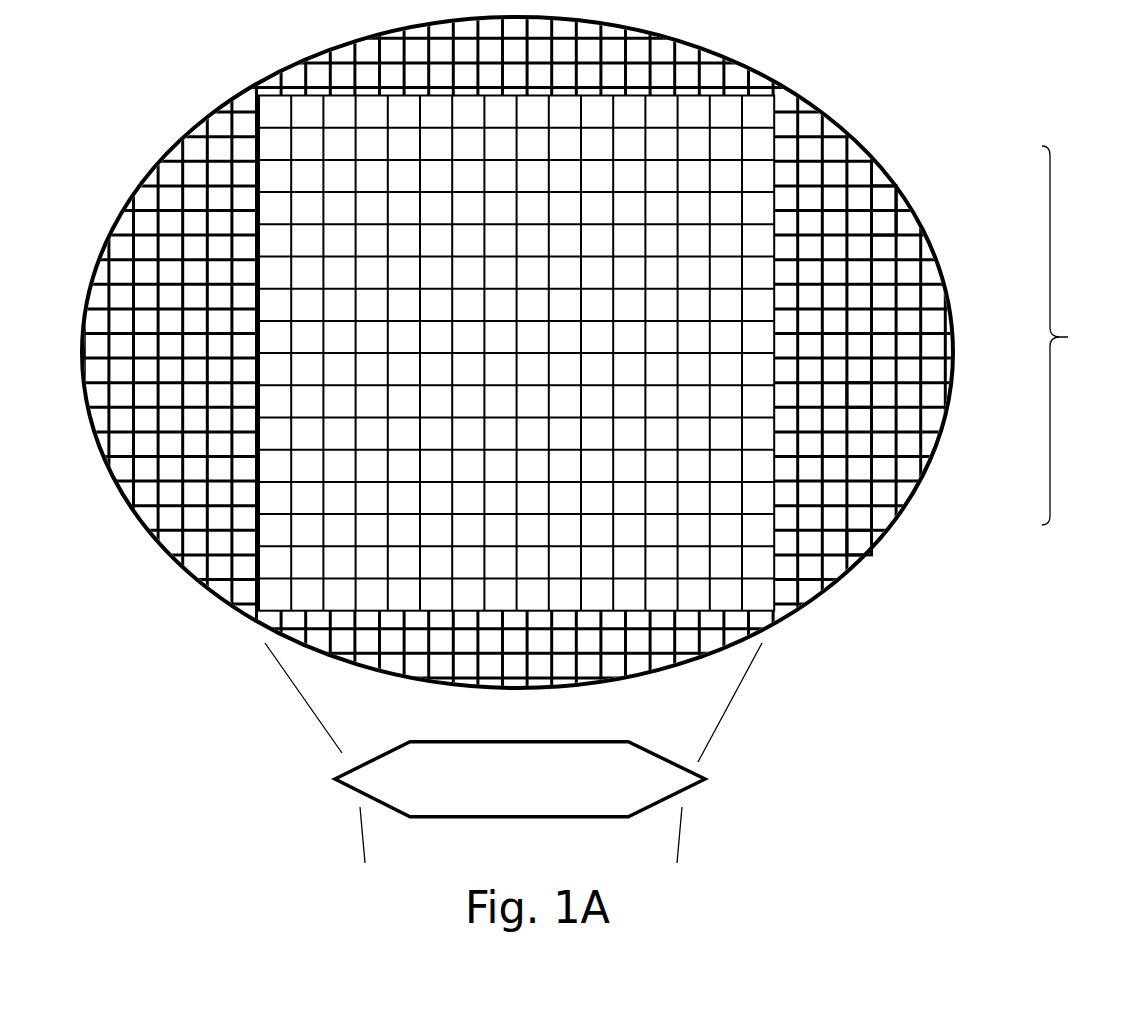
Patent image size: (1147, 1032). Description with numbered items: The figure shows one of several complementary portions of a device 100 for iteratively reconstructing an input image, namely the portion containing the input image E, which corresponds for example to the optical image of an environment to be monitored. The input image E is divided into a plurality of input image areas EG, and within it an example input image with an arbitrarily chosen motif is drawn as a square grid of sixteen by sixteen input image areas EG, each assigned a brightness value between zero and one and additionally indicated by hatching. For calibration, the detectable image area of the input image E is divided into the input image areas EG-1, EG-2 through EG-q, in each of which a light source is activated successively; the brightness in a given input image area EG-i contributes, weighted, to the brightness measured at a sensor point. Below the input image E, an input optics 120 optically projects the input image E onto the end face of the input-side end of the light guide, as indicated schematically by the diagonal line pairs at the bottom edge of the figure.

The device 100 is at (573, 516).
The input image E is at (860, 152).
The input image areas EG is at (1073, 335).
The first input image area EG-1 is at (878, 207).
The second input image area EG-2 is at (878, 228).
The i-th input image area EG-i is at (853, 398).
The q-th input image area EG-q is at (850, 532).
The input optics 120 is at (340, 783).